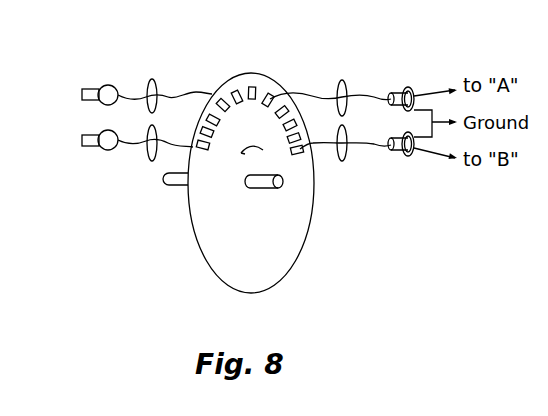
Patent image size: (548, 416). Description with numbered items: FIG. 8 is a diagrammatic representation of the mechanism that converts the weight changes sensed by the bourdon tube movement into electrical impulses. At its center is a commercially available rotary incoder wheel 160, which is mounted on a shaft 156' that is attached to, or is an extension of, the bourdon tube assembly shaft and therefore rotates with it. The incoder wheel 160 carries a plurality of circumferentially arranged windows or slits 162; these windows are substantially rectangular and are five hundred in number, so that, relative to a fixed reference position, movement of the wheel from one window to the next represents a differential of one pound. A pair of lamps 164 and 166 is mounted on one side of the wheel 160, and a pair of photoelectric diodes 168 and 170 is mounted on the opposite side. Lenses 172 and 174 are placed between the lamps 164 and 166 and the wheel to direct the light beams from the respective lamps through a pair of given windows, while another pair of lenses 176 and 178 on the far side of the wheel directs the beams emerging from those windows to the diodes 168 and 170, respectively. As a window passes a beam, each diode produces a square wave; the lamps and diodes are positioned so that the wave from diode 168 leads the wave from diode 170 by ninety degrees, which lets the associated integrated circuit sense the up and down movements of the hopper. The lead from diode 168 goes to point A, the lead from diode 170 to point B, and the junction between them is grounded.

The shaft 156' is at (157, 205).
The rotary incoder wheel 160 is at (206, 266).
The windows or slits 162 is at (251, 90).
The lamp 164 is at (90, 89).
The lamp 166 is at (88, 146).
The photoelectric diode 168 is at (397, 92).
The photoelectric diode 170 is at (398, 152).
The lens 172 is at (151, 79).
The lens 174 is at (150, 161).
The lens 176 is at (339, 80).
The lens 178 is at (341, 162).